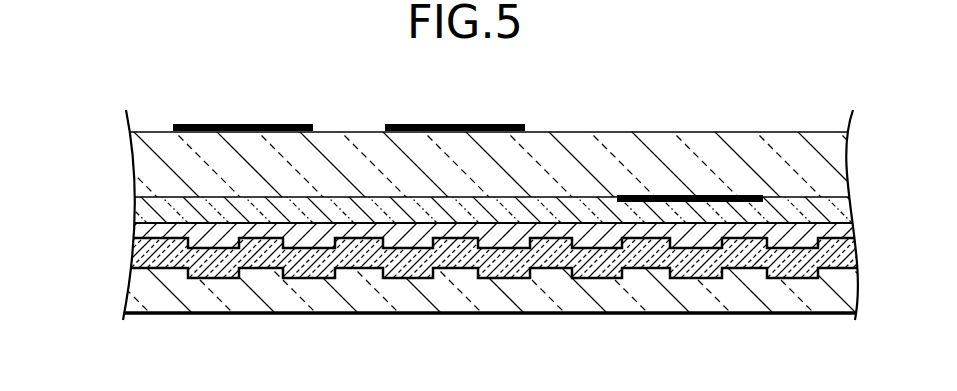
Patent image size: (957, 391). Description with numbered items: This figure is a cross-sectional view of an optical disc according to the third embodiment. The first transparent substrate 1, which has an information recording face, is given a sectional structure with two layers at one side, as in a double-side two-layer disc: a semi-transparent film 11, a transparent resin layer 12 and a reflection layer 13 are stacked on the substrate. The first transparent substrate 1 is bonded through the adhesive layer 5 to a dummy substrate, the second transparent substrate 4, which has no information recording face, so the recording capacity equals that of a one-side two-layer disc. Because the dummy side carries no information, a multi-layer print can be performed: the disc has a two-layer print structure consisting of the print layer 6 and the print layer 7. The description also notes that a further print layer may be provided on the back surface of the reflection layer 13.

The first transparent substrate 1 is at (124, 313).
The second transparent substrate 4 is at (153, 172).
The adhesive layer 5 is at (135, 215).
The print layer 6 is at (287, 124).
The print layer 7 is at (695, 195).
The semi-transparent film 11 is at (128, 273).
The transparent resin layer 12 is at (130, 256).
The reflection layer 13 is at (133, 232).